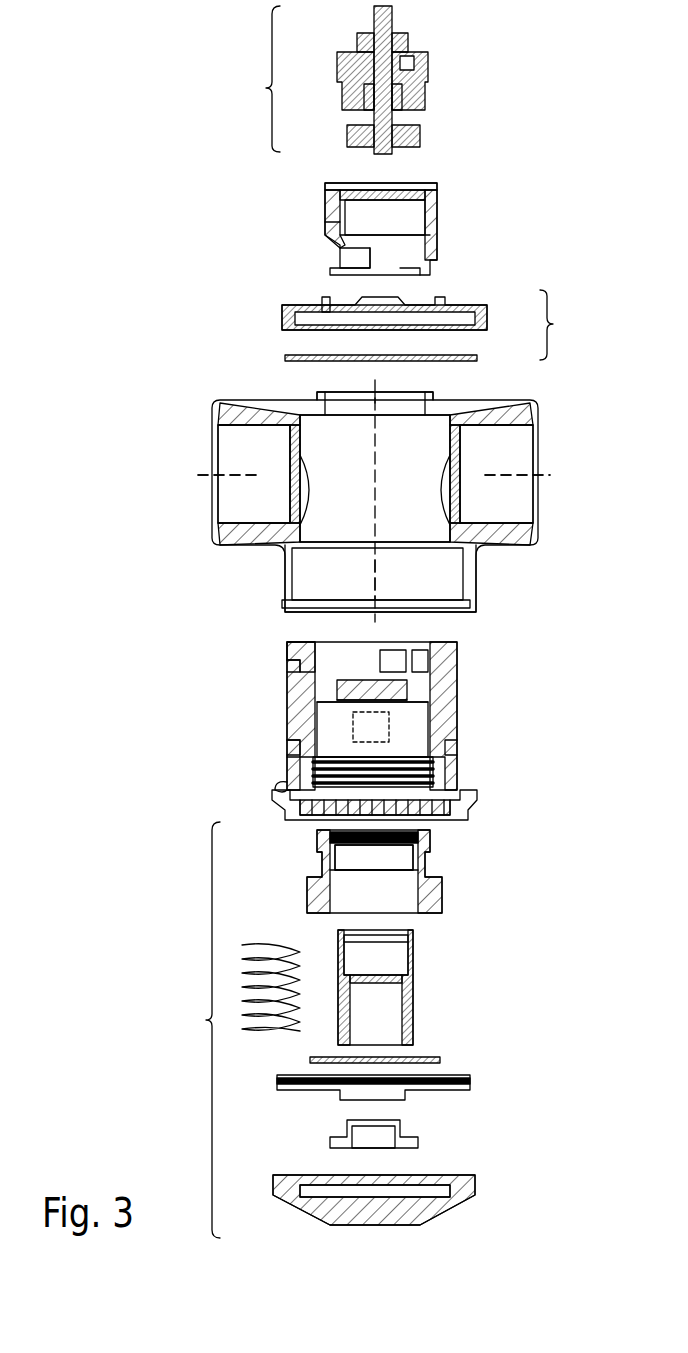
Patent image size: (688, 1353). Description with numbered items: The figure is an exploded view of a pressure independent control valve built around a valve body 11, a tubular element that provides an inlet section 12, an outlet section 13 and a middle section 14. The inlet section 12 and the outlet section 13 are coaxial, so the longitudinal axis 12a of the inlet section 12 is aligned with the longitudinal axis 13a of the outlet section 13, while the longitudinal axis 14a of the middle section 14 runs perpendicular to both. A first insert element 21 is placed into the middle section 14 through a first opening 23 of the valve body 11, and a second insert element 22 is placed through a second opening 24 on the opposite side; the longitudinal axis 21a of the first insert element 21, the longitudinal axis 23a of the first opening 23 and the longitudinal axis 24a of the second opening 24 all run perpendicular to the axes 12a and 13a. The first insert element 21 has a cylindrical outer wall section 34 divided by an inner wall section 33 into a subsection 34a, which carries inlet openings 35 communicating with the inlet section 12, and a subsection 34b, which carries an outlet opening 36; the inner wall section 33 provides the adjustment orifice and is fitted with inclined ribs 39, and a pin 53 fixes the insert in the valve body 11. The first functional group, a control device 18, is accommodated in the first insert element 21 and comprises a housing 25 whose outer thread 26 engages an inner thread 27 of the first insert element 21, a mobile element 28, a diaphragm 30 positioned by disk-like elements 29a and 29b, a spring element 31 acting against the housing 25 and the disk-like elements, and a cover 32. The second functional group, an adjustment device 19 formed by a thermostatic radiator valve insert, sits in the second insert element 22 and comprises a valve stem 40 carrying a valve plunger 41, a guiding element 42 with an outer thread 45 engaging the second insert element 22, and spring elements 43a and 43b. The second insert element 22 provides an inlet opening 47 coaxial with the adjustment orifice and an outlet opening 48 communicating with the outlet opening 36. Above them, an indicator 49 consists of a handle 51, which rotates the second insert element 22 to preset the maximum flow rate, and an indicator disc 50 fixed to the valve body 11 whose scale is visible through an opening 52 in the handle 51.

The valve body 11 is at (545, 410).
The inlet section 12 is at (238, 447).
The longitudinal axis of the inlet section 12a is at (240, 480).
The outlet section 13 is at (512, 447).
The longitudinal axis of the outlet section 13a is at (508, 480).
The middle section 14 is at (325, 495).
The longitudinal axis of the middle section 14a is at (370, 505).
The control device 18 is at (199, 1030).
The adjustment device 19 is at (261, 79).
The first insert element 21 is at (485, 812).
The longitudinal axis of the first insert element 21a is at (338, 738).
The second insert element 22 is at (450, 228).
The first opening 23 is at (338, 603).
The longitudinal axis of the first opening 23a is at (380, 582).
The second opening 24 is at (338, 398).
The longitudinal axis of the second opening 24a is at (385, 402).
The housing 25 is at (452, 897).
The outer thread 26 is at (330, 870).
The inner thread 27 is at (448, 782).
The mobile element 28 is at (413, 993).
The disk-like element 29a is at (440, 1058).
The disk-like element 29b is at (418, 1142).
The diaphragm 30 is at (470, 1082).
The spring element 31 is at (275, 1030).
The cover 32 is at (476, 1186).
The inner wall section 33 is at (420, 694).
The outer wall section 34 is at (440, 718).
The subsection 34a is at (300, 750).
The subsection 34b is at (306, 665).
The inlet opening 35 is at (390, 738).
The outlet opening 36 is at (395, 650).
The rib 39 is at (334, 692).
The valve stem 40 is at (392, 18).
The valve plunger 41 is at (420, 134).
The guiding element 42 is at (428, 66).
The spring element 43a is at (370, 68).
The spring element 43b is at (366, 108).
The outer thread 45 is at (338, 232).
The inlet opening 47 is at (403, 258).
The outlet opening 48 is at (330, 258).
The indicator 49 is at (556, 325).
The indicator disc 50 is at (477, 356).
The handle 51 is at (486, 312).
The opening 52 is at (300, 305).
The pin 53 is at (273, 786).